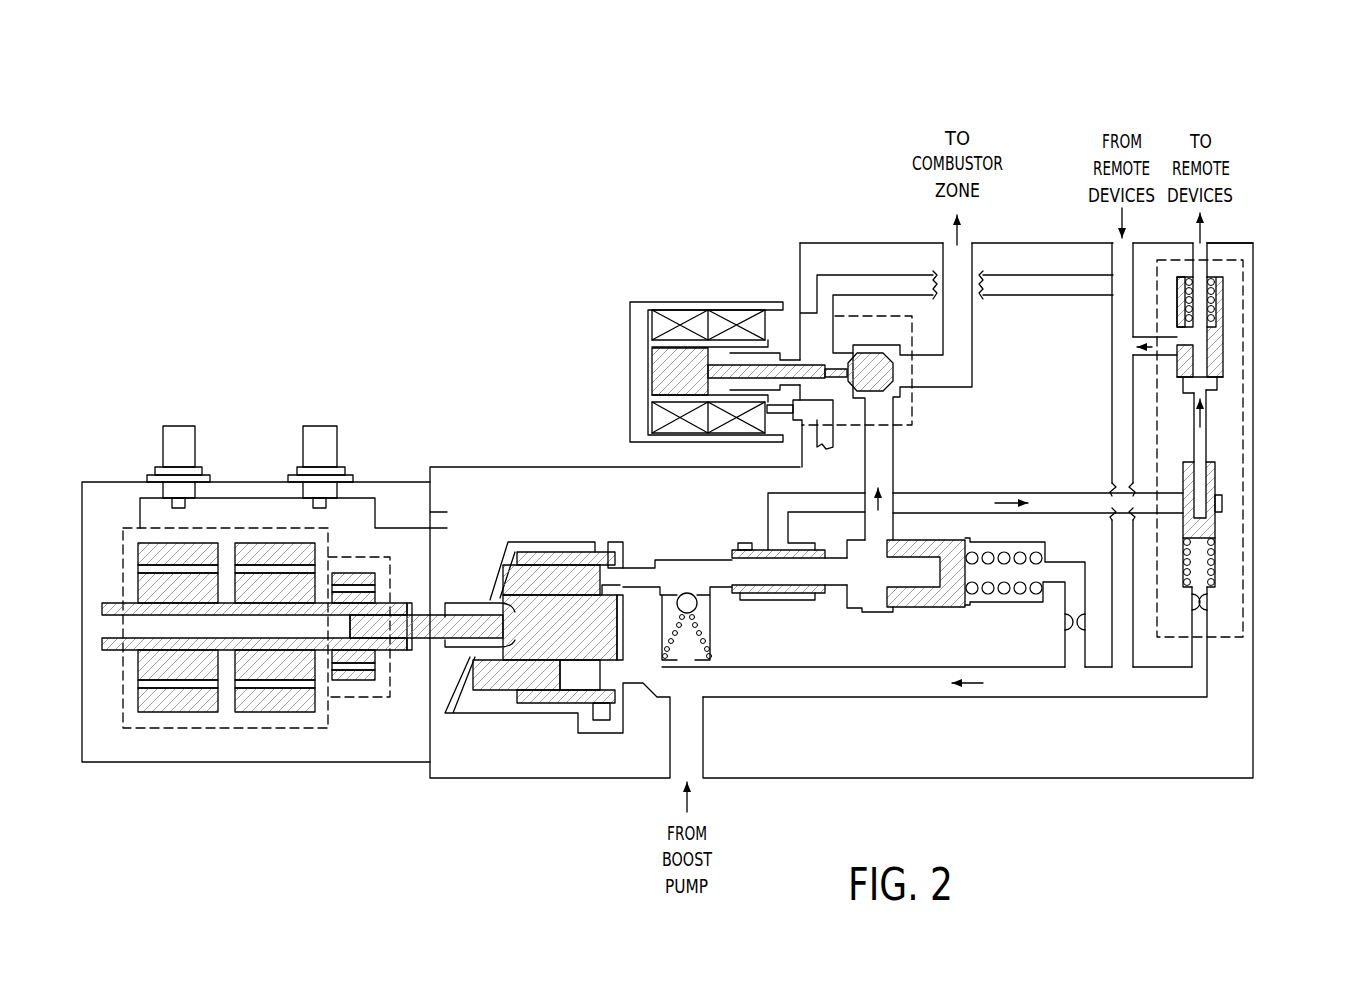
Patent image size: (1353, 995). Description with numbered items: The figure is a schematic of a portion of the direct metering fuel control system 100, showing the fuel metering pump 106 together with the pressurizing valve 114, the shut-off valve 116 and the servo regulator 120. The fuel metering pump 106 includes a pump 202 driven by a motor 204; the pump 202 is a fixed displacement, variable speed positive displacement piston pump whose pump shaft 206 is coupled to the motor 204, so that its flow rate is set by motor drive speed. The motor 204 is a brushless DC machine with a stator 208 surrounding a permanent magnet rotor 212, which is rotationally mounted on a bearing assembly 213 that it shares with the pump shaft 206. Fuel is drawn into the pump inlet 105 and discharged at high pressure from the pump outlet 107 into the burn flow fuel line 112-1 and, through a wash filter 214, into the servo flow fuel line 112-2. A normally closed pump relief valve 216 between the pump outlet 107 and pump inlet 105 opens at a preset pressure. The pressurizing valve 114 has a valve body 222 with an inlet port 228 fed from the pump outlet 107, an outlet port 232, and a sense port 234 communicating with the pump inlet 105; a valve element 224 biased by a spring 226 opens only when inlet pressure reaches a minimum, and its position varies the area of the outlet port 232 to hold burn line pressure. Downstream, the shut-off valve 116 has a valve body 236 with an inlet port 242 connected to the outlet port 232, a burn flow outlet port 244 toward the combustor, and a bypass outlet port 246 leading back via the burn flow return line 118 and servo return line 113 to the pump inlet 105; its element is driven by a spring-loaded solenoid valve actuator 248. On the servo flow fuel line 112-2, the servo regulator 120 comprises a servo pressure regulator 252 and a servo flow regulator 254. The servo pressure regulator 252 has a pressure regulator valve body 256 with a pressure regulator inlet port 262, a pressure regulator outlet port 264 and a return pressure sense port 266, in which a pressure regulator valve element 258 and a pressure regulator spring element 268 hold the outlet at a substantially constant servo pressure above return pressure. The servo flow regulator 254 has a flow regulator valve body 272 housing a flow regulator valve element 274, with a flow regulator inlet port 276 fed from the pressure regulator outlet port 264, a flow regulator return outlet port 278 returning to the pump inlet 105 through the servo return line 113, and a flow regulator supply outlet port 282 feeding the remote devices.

The direct metering fuel control system 100 is at (348, 222).
The pump inlet 105 is at (693, 712).
The fuel metering pump 106 is at (488, 408).
The pump outlet 107 is at (703, 560).
The burn flow fuel line 112-1 is at (950, 267).
The servo flow fuel line 112-2 is at (965, 492).
The servo return line 113 is at (1113, 397).
The pressurizing valve 114 is at (921, 614).
The shut-off valve 116 is at (627, 304).
The burn flow return line 118 is at (1047, 273).
The servo regulator 120 is at (1252, 305).
The pump 202 is at (552, 707).
The motor 204 is at (230, 728).
The pump shaft 206 is at (432, 617).
The stator 208 is at (268, 543).
The permanent magnet rotor 212 is at (307, 667).
The bearing assembly 213 is at (347, 573).
The wash filter 214 is at (750, 543).
The pump relief valve 216 is at (668, 587).
The valve body 222 is at (970, 603).
The valve element 224 is at (948, 540).
The spring 226 is at (1038, 558).
The inlet port 228 is at (840, 568).
The outlet port 232 is at (873, 528).
The sense port 234 is at (1050, 575).
The valve body 236 is at (915, 422).
The inlet port 242 is at (880, 412).
The burn flow outlet port 244 is at (913, 370).
The bypass outlet port 246 is at (815, 310).
The valve actuator 248 is at (683, 302).
The servo pressure regulator 252 is at (1178, 460).
The servo flow regulator 254 is at (1172, 317).
The pressure regulator valve body 256 is at (1217, 555).
The pressure regulator valve element 258 is at (872, 353).
The pressure regulator inlet port 262 is at (1172, 502).
The pressure regulator outlet port 264 is at (1200, 453).
The return pressure sense port 266 is at (1200, 590).
The pressure regulator spring element 268 is at (1213, 550).
The flow regulator valve body 272 is at (1222, 383).
The flow regulator valve element 274 is at (1217, 348).
The flow regulator inlet port 276 is at (1205, 390).
The flow regulator return outlet port 278 is at (1167, 366).
The flow regulator supply outlet port 282 is at (1200, 268).